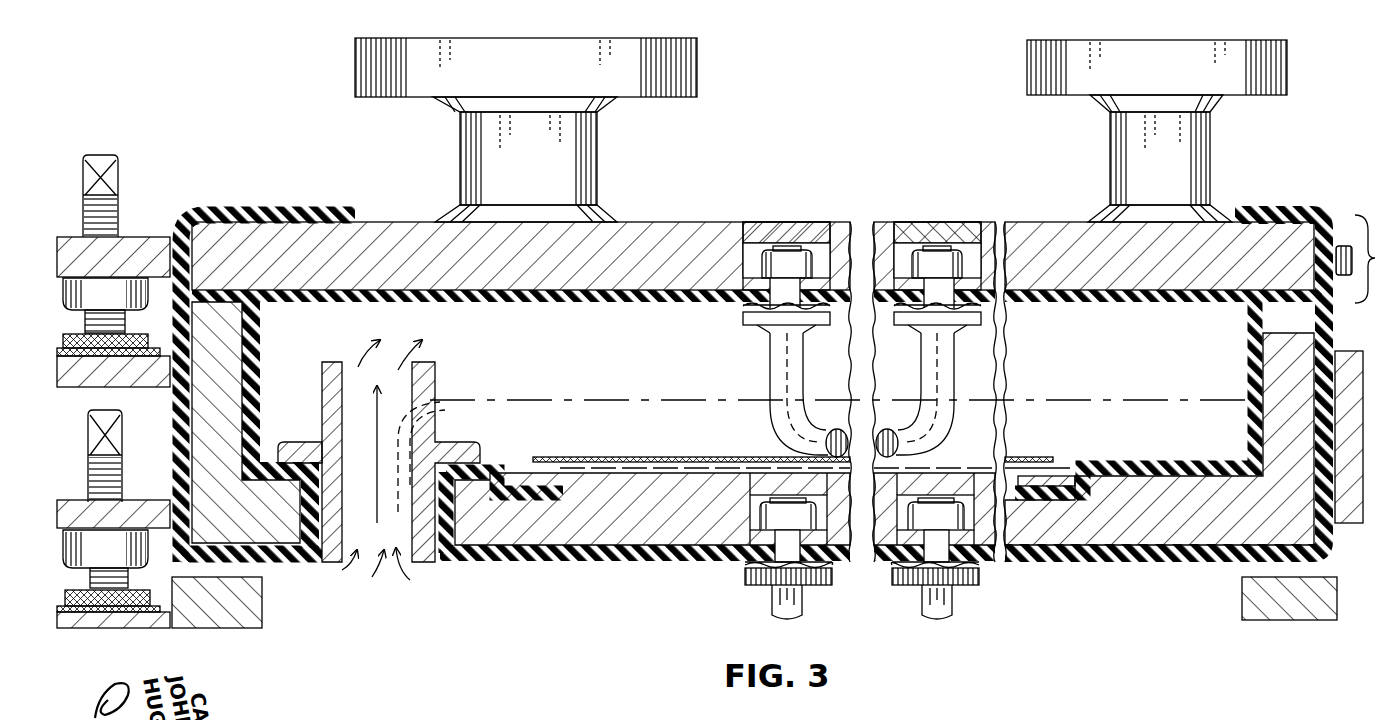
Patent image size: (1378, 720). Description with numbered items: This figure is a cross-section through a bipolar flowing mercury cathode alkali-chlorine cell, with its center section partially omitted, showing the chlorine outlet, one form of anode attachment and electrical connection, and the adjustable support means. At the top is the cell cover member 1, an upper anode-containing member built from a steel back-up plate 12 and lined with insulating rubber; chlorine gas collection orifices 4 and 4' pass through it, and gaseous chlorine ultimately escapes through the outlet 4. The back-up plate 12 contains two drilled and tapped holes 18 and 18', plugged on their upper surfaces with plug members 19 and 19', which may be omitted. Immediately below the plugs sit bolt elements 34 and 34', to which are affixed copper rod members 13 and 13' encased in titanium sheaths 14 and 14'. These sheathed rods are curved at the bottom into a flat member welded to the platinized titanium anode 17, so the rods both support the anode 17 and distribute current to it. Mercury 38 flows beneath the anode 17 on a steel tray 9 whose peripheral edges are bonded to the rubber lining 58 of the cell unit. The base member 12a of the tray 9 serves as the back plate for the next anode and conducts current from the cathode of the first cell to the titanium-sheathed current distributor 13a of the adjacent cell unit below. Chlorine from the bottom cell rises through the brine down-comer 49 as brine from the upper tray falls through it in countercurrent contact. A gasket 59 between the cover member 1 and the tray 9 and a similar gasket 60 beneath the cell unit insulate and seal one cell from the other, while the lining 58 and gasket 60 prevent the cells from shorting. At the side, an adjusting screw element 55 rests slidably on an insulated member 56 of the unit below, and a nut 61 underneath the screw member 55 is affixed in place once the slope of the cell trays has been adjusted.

The cover member 1 is at (1363, 212).
The chlorine outlet 4 is at (526, 130).
The chlorine outlet orifice 4' is at (1157, 131).
The tray 9 is at (582, 470).
The back-up plate 12 is at (668, 222).
The backer plate 12a is at (616, 530).
The rod member 13 is at (809, 395).
The rod member 13' is at (915, 395).
The current distributor 13a is at (803, 600).
The titanium sheath 14 is at (780, 346).
The titanium sheath 14' is at (946, 346).
The anode 17 is at (606, 462).
The tapped hole 18 is at (751, 273).
The tapped hole 18' is at (903, 275).
The plug 19 is at (786, 238).
The plug 19' is at (937, 238).
The bolt 34 is at (787, 264).
The bolt 34' is at (937, 264).
The mercury 38 is at (1062, 470).
The brine down-comer 49 is at (326, 563).
The adjusting screw element 55 is at (115, 181).
The insulated member 56 is at (140, 340).
The rubber lining 58 is at (495, 468).
The gasket 59 is at (225, 313).
The gasket 60 is at (195, 568).
The nut 61 is at (112, 306).